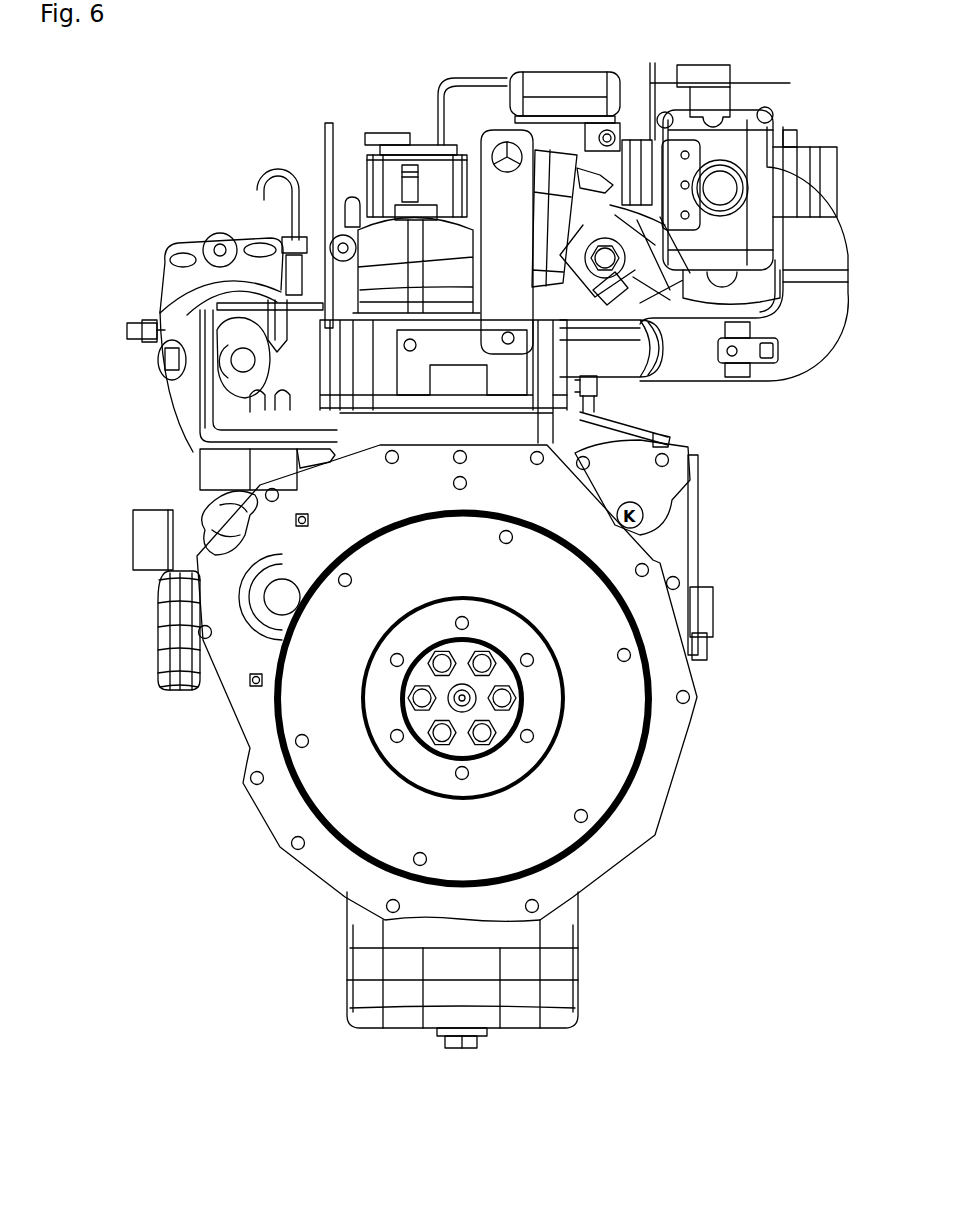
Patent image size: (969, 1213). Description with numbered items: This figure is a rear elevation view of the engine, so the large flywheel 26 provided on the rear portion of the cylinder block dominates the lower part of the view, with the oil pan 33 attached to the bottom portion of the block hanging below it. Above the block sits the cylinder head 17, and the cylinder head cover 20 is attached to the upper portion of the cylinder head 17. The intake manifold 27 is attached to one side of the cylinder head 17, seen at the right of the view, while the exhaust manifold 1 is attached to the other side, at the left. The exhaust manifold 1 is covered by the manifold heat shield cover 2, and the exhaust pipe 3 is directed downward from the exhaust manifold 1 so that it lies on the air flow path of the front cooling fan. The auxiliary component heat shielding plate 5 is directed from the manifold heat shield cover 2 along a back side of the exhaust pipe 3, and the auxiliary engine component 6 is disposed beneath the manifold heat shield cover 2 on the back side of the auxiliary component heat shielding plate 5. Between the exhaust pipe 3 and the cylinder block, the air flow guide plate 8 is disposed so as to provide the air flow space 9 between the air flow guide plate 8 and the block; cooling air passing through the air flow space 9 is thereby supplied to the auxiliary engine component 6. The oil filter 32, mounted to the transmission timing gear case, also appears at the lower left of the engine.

The exhaust manifold 1 is at (165, 352).
The manifold heat shield cover 2 is at (173, 295).
The exhaust pipe 3 is at (185, 525).
The auxiliary component heat shielding plate 5 is at (193, 452).
The auxiliary engine component 6 is at (197, 550).
The air flow guide plate 8 is at (280, 470).
The air flow space 9 is at (308, 455).
The cylinder head 17 is at (523, 377).
The cylinder head cover 20 is at (373, 263).
The flywheel 26 is at (618, 735).
The intake manifold 27 is at (795, 352).
The oil filter 32 is at (163, 648).
The oil pan 33 is at (537, 963).